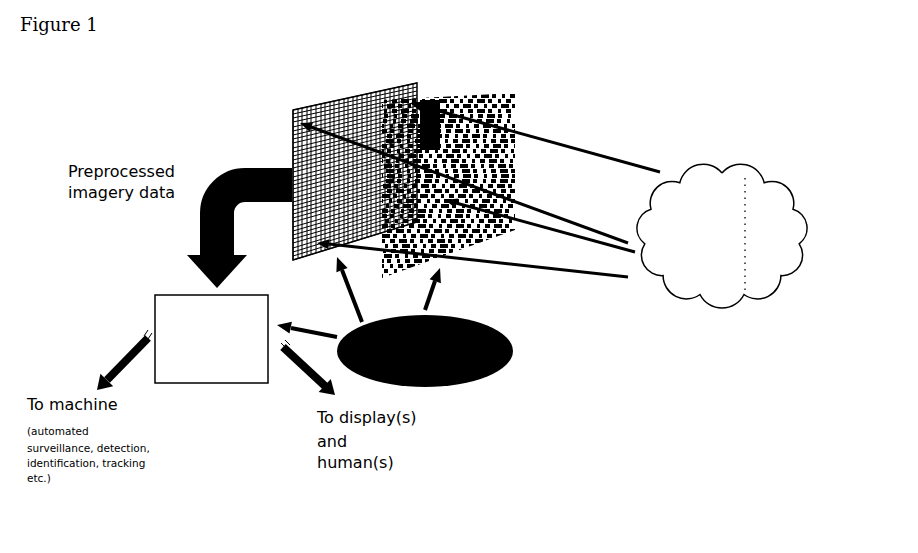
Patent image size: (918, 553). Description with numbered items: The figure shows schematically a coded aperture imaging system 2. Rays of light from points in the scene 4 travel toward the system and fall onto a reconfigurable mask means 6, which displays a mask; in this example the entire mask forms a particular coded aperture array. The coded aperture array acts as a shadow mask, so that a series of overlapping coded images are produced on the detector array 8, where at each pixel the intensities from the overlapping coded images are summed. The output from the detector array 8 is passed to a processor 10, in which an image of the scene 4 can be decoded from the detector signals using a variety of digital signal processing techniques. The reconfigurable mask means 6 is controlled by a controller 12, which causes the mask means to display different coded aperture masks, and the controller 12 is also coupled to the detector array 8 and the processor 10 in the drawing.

The coded aperture imaging system 2 is at (561, 100).
The scene 4 is at (752, 241).
The reconfigurable mask means 6 is at (510, 163).
The detector array 8 is at (318, 110).
The processor 10 is at (167, 315).
The controller 12 is at (500, 362).